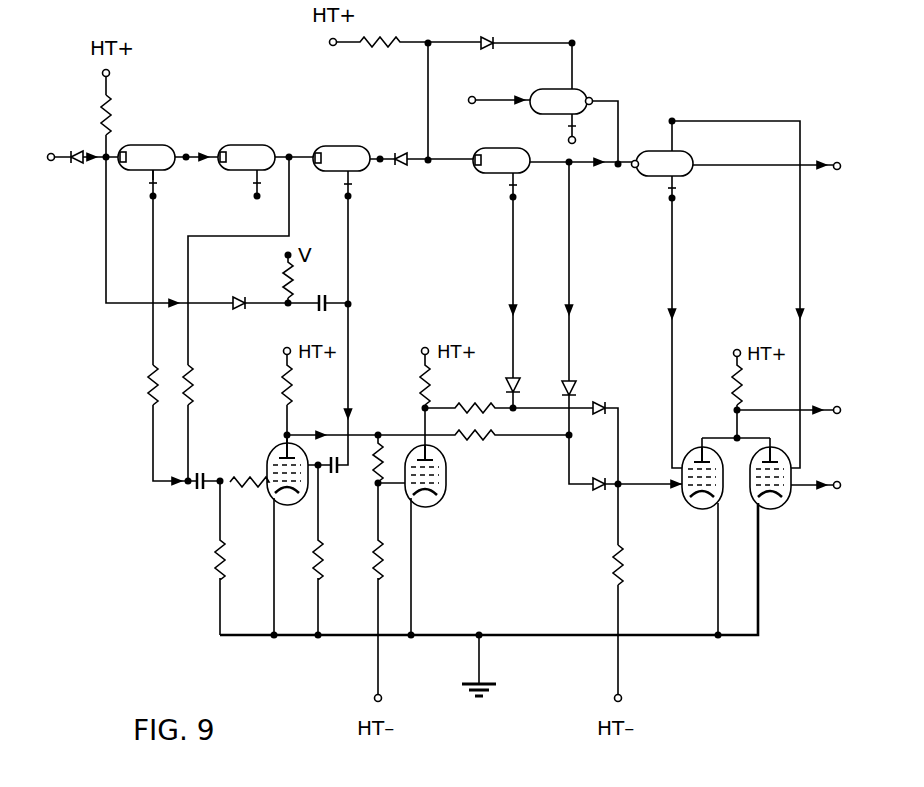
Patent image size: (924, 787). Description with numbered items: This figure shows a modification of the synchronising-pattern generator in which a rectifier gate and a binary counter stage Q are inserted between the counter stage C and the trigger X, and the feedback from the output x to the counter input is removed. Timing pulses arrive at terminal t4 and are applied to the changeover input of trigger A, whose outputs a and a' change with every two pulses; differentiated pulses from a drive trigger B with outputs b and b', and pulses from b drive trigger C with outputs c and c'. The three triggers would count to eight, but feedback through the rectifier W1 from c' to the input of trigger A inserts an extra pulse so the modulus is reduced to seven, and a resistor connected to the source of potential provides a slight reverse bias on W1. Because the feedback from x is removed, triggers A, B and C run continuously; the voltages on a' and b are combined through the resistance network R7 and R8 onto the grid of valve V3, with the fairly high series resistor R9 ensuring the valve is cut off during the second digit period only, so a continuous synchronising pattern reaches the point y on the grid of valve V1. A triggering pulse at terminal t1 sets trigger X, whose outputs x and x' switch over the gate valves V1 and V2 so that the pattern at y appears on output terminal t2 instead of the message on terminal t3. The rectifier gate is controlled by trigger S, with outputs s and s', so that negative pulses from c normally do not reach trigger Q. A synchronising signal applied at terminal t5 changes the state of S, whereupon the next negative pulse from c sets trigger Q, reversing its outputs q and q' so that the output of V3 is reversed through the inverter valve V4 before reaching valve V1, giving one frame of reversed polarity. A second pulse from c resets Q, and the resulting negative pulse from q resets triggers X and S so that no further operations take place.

The trigger A is at (146, 145).
The trigger B is at (246, 145).
The trigger C is at (341, 146).
The binary counter stage Q is at (501, 148).
The trigger S is at (558, 89).
The trigger X is at (645, 151).
The output connection a is at (194, 146).
The output connection a' is at (157, 181).
The output connection b is at (291, 146).
The output connection b' is at (247, 195).
The output connection c is at (382, 148).
The output connection c' is at (339, 195).
The output connection q is at (595, 176).
The output connection q' is at (502, 197).
The output connection s is at (580, 39).
The output connection s' is at (582, 141).
The output connection x is at (666, 121).
The output connection x' is at (681, 200).
The point on grid of valve V1 y is at (620, 481).
The terminal t1 is at (829, 154).
The output terminal t2 is at (828, 397).
The terminal t3 is at (829, 474).
The terminal t4 is at (83, 174).
The terminal t5 is at (500, 88).
The rectifier W1 is at (210, 287).
The resistor R7 is at (130, 385).
The resistor R8 is at (206, 385).
The resistor R9 is at (249, 498).
The valve V1 is at (685, 504).
The valve V2 is at (788, 505).
The valve V3 is at (303, 499).
The inverter valve V4 is at (441, 500).